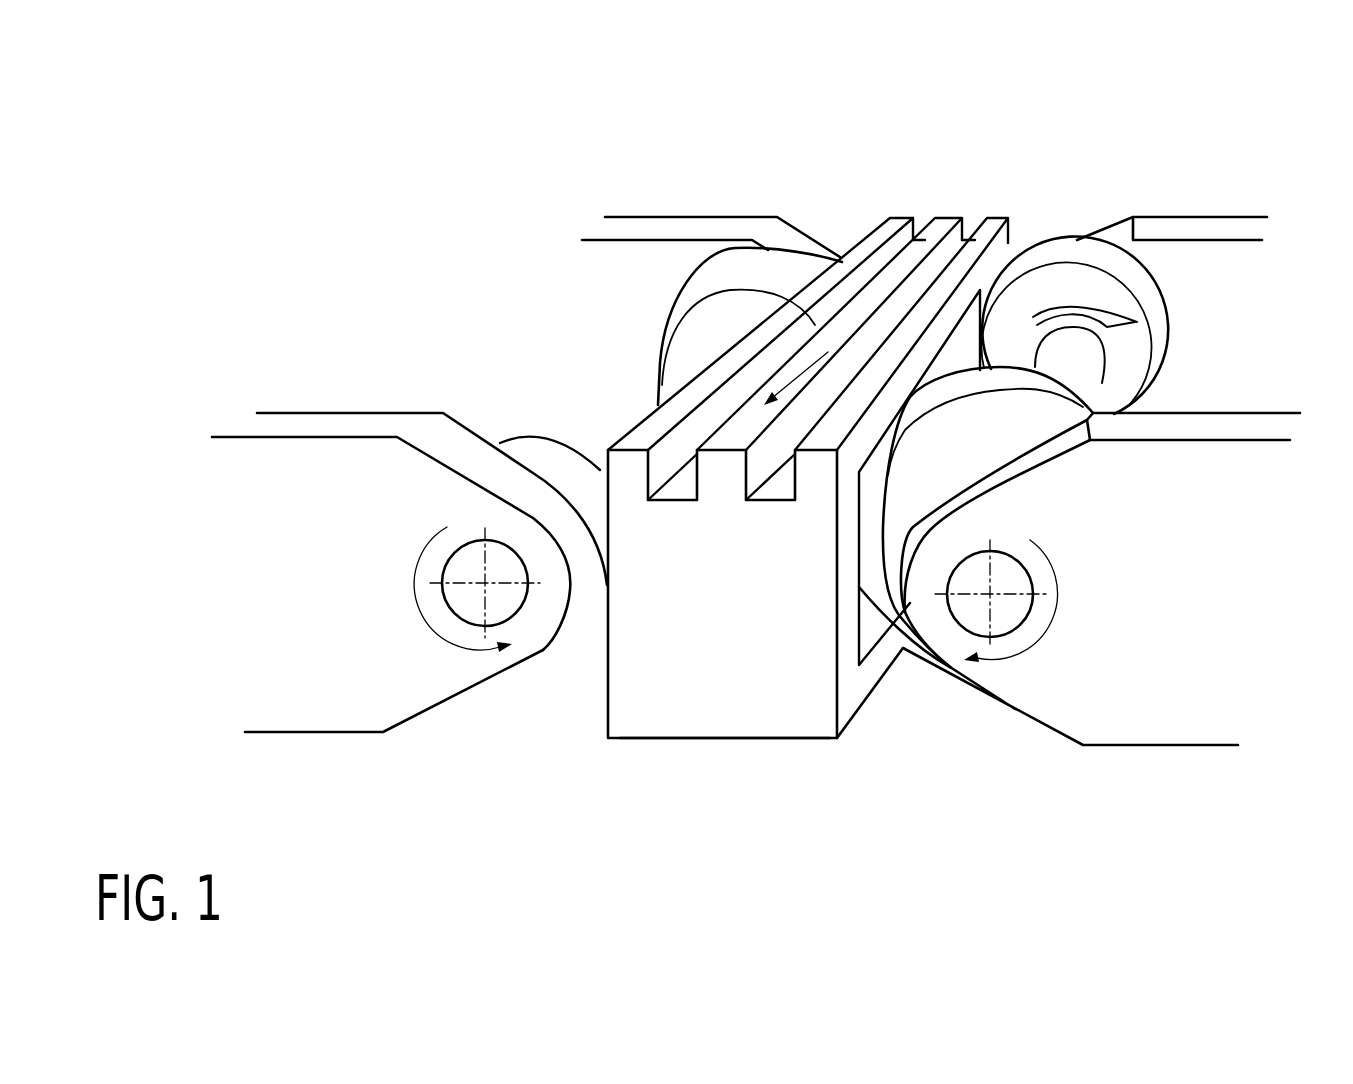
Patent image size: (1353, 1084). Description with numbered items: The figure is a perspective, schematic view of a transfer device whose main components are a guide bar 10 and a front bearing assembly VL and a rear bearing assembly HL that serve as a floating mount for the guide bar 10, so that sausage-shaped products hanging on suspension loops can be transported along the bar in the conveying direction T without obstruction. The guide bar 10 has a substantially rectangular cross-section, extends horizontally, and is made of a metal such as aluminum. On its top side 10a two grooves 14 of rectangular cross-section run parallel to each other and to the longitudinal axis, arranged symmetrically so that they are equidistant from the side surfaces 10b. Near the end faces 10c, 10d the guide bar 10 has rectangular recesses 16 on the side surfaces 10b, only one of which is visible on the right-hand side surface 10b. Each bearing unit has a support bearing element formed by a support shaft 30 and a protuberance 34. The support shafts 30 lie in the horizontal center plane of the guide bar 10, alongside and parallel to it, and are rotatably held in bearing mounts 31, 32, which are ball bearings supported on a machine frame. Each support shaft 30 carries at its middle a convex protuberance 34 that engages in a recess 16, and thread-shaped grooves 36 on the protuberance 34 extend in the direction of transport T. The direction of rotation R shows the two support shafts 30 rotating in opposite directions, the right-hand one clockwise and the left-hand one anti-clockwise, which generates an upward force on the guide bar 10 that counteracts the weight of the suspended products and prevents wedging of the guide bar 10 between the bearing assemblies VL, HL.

The guide bar 10 is at (660, 812).
The top side 10a is at (948, 218).
The side surfaces 10b is at (603, 707).
The end face 10c is at (715, 723).
The end face 10d is at (998, 218).
The grooves 14 is at (772, 493).
The rectangular recesses 16 is at (990, 333).
The support shaft 30 is at (657, 395).
The bearing mount 31 is at (333, 707).
The bearing mount 32 is at (675, 228).
The protuberance 34 is at (437, 378).
The grooves 36 is at (521, 380).
The direction of rotation R is at (460, 650).
The conveying direction T is at (885, 285).
The front bearing assembly VL is at (443, 311).
The rear bearing assembly HL is at (805, 172).